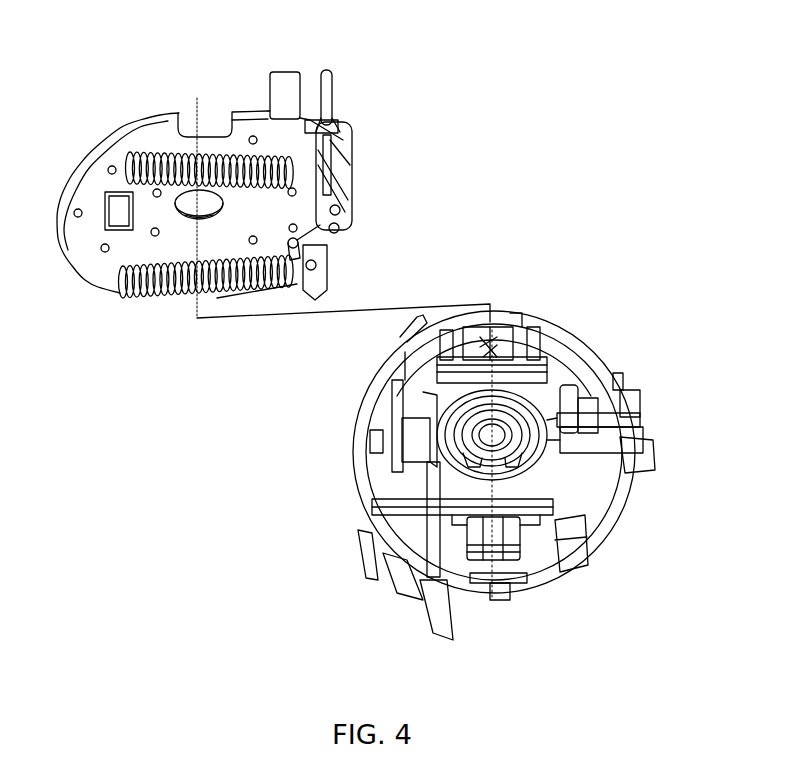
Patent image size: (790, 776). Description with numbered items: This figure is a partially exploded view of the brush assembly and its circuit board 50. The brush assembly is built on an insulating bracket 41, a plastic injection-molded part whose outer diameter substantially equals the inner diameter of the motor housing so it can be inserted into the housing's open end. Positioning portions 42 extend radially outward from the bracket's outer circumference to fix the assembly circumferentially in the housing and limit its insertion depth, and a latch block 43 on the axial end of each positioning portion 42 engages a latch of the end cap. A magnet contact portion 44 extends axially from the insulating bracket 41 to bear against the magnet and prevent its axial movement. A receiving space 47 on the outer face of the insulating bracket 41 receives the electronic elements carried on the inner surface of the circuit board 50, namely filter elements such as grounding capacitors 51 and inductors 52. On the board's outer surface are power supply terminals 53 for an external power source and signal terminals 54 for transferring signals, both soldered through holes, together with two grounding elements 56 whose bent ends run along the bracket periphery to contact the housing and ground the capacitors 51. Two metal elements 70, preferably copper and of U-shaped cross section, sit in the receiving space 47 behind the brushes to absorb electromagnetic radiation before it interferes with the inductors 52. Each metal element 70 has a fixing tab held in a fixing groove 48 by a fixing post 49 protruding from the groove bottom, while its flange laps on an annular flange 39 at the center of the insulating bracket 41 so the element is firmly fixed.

The annular flange 39 is at (548, 462).
The insulating bracket 41 is at (577, 337).
The positioning portions 42 is at (375, 527).
The latch block 43 is at (413, 578).
The magnet contact portion 44 is at (427, 622).
The receiving space 47 is at (600, 357).
The fixing groove 48 is at (503, 318).
The fixing post 49 is at (520, 600).
The circuit board 50 is at (72, 232).
The capacitors 51 is at (305, 170).
The inductors 52 is at (163, 150).
The power supply terminals 53 is at (280, 95).
The signal terminals 54 is at (330, 95).
The grounding elements 56 is at (312, 190).
The metal elements 70 is at (541, 327).